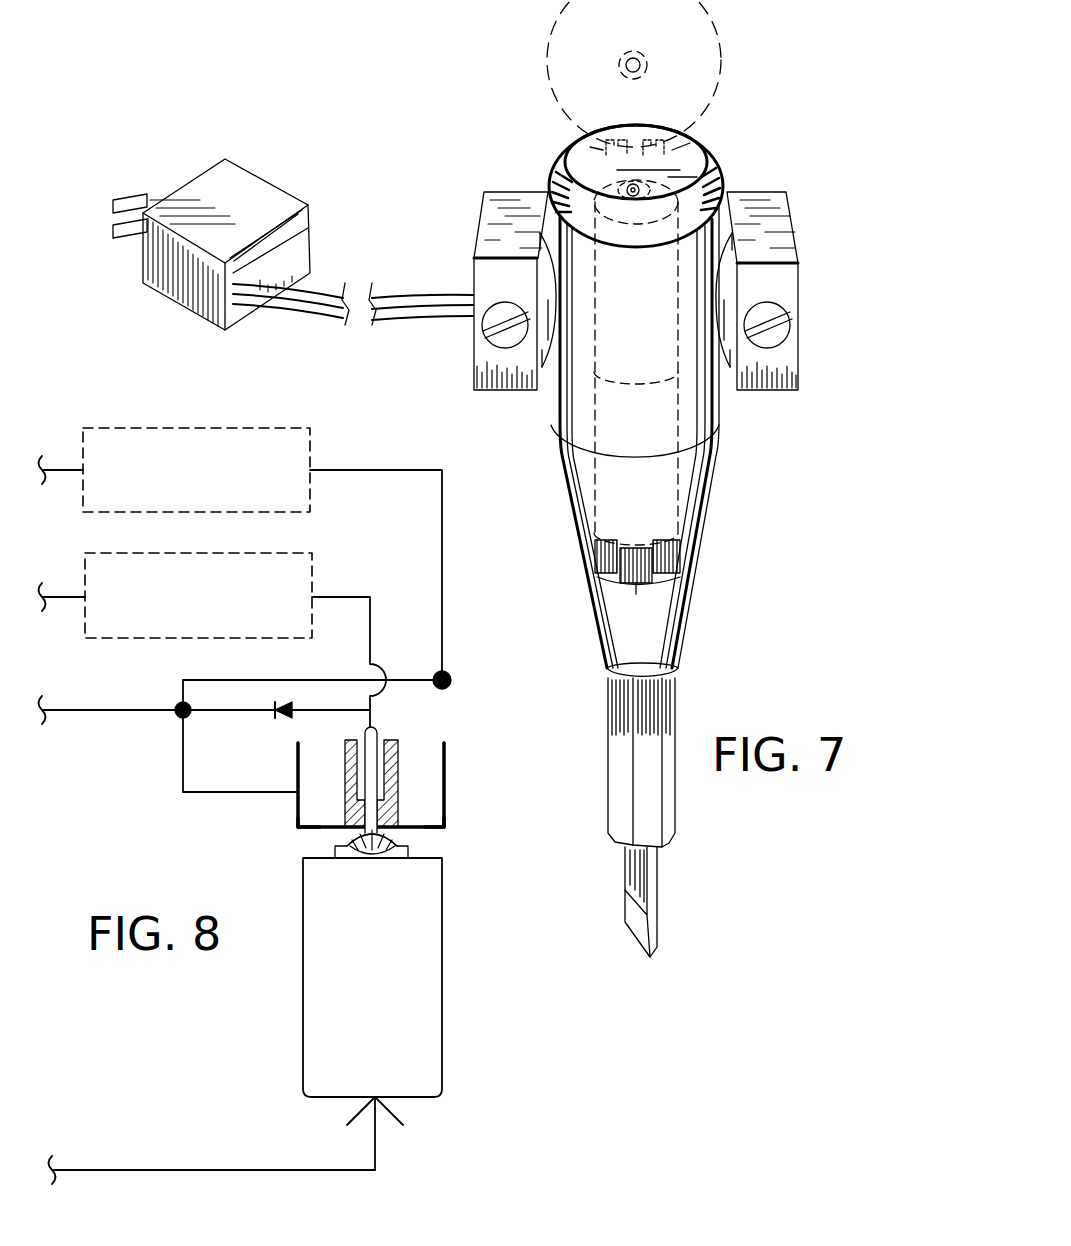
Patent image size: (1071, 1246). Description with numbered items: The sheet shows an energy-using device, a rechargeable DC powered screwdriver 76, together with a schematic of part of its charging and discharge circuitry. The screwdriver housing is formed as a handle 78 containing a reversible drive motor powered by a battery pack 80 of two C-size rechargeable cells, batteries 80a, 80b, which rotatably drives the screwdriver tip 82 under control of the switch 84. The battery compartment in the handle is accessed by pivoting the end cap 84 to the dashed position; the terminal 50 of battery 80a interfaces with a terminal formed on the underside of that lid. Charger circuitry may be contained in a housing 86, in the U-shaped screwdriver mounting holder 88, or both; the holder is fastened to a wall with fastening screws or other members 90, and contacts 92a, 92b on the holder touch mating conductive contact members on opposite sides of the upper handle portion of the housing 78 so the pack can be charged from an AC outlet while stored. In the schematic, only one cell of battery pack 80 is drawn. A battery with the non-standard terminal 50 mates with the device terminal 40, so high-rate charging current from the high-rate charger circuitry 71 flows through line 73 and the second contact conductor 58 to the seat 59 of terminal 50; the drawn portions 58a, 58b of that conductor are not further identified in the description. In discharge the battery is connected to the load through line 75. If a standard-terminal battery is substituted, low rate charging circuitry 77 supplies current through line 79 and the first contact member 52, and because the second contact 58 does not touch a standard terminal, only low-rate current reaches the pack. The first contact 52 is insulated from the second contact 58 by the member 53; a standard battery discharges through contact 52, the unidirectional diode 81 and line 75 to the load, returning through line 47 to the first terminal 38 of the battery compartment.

In FIG. 8, the first terminal 38 is at (393, 1113).
In FIG. 7, the device terminal 40 is at (633, 51).
In FIG. 8, the device terminal 40 is at (421, 728).
In FIG. 8, the line 47 is at (190, 1168).
In FIG. 7, the battery terminal 50 is at (633, 188).
In FIG. 8, the battery terminal 50 is at (408, 851).
In FIG. 8, the first contact member 52 is at (372, 768).
In FIG. 8, the insulating member 53 is at (398, 747).
In FIG. 8, the second contact conductor 58 is at (447, 773).
In FIG. 8, the bracket leg 58a is at (343, 827).
In FIG. 8, the bracket leg 58b is at (425, 820).
In FIG. 8, the seat 59 is at (388, 856).
In FIG. 8, the high-rate charger circuitry 71 is at (153, 428).
In FIG. 8, the line 73 is at (443, 592).
In FIG. 8, the line 75 is at (118, 712).
In FIG. 7, the rechargeable DC powered screwdriver 76 is at (445, 176).
In FIG. 8, the low rate charging circuitry 77 is at (260, 553).
In FIG. 7, the handle 78 is at (693, 487).
In FIG. 8, the line 79 is at (370, 597).
In FIG. 7, the battery pack 80 is at (681, 285).
In FIG. 8, the battery pack 80 is at (350, 977).
In FIG. 7, the battery 80a is at (660, 323).
In FIG. 7, the battery 80b is at (660, 457).
In FIG. 8, the diode 81 is at (290, 705).
In FIG. 7, the screwdriver tip 82 is at (657, 923).
In FIG. 7, the end cap 84 is at (683, 157).
In FIG. 7, the housing 86 is at (233, 197).
In FIG. 7, the screwdriver mounting holder 88 is at (779, 233).
In FIG. 7, the fastening screws 90 is at (495, 344).
In FIG. 7, the contact 92a is at (543, 307).
In FIG. 7, the contact 92b is at (723, 316).